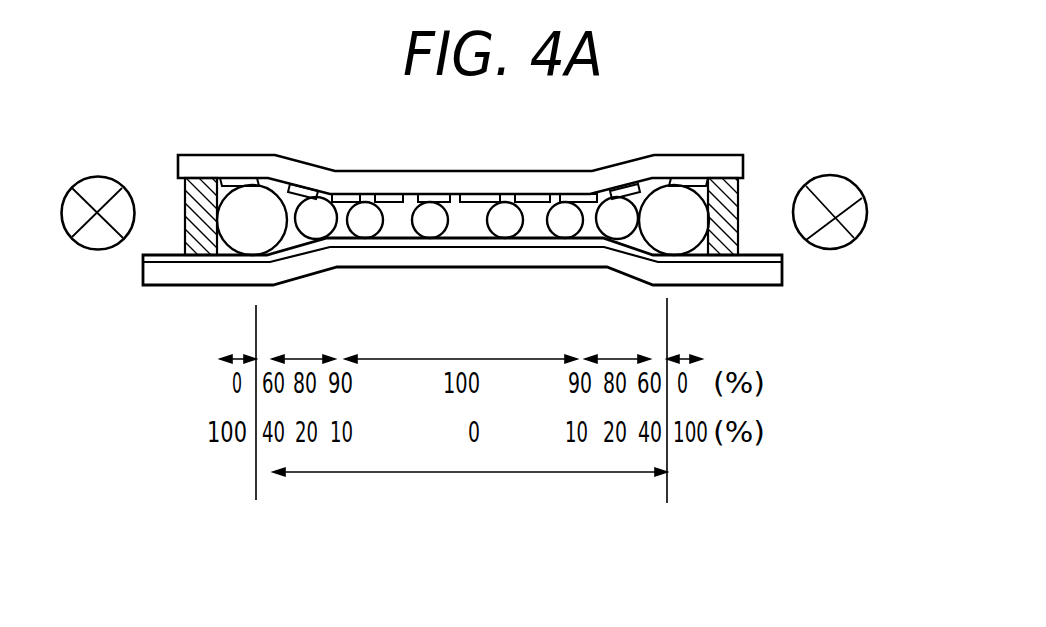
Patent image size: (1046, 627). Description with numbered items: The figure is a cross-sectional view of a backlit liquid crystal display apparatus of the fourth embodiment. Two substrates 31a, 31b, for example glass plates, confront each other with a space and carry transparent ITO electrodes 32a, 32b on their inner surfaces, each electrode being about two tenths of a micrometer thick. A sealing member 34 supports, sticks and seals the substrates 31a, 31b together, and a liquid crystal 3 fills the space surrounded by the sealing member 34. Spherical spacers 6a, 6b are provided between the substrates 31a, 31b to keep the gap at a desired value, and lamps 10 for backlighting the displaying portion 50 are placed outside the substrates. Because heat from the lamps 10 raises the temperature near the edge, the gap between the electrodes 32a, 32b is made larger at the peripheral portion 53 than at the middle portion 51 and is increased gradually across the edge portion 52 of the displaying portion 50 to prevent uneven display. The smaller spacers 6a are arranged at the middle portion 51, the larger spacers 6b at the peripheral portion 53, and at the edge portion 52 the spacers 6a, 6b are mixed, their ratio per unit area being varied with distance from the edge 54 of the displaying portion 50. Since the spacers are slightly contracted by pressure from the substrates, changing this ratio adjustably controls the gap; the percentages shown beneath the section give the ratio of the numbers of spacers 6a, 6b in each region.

The liquid crystal 3 is at (398, 228).
The spacers 6a is at (320, 212).
The spacers 6b is at (243, 197).
The lamps 10 is at (100, 188).
The substrate 31a is at (745, 172).
The substrate 31b is at (783, 277).
The transparent electrode 32a is at (433, 193).
The transparent electrode 32b is at (783, 258).
The sealing member 34 is at (740, 203).
The displaying portion 50 is at (490, 472).
The middle portion 51 is at (455, 355).
The edge portion 52 is at (305, 355).
The peripheral portion 53 is at (242, 357).
The edge 54 is at (255, 483).